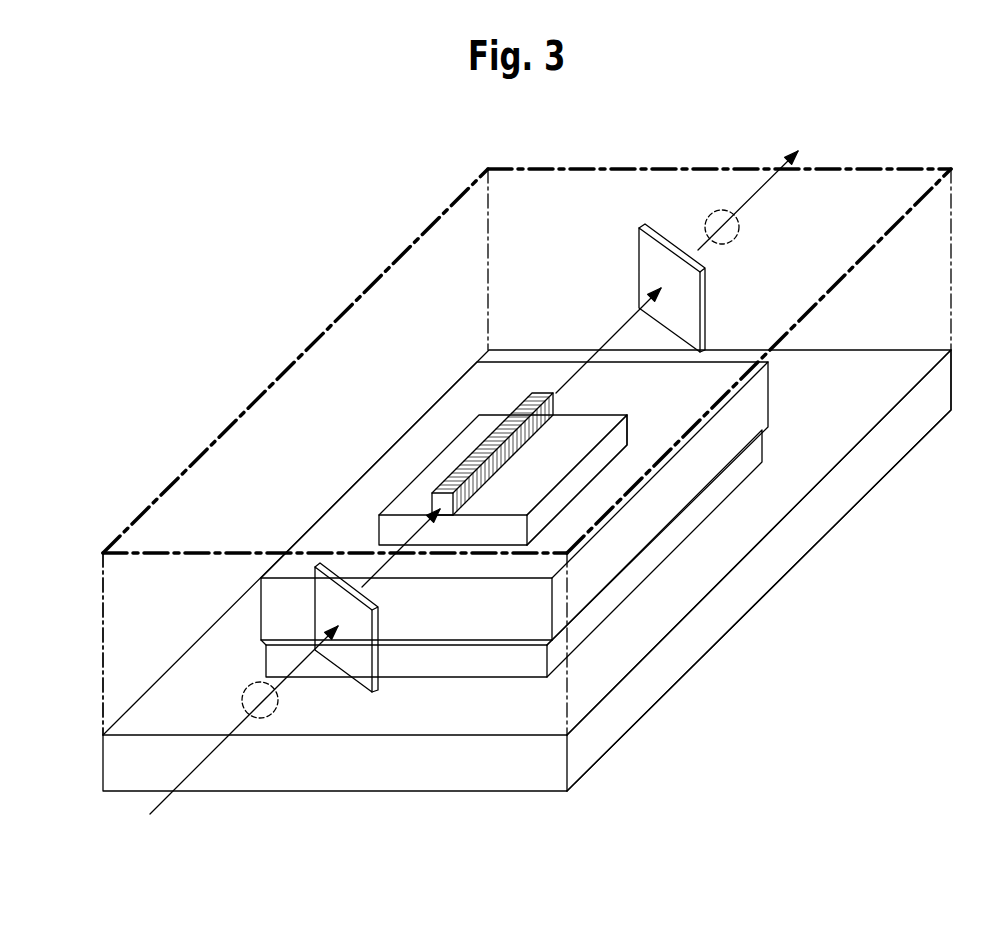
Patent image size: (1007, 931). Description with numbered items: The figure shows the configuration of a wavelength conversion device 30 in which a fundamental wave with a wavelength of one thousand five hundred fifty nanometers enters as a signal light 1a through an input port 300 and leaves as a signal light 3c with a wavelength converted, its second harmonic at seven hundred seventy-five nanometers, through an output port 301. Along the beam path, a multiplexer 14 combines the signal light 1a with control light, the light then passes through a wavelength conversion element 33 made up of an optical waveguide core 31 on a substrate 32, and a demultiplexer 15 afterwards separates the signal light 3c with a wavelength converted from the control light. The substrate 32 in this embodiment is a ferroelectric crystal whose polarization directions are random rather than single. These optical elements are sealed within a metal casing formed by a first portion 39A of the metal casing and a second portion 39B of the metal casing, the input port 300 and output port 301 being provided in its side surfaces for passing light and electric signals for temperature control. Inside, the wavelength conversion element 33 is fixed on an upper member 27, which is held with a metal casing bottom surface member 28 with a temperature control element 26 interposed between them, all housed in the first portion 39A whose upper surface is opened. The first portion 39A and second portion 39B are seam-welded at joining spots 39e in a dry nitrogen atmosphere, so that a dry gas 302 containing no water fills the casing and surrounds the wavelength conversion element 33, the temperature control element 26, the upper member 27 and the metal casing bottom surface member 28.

The signal light 1a is at (160, 807).
The signal light with a wavelength converted 3c is at (793, 152).
The multiplexer 14 is at (378, 662).
The demultiplexer 15 is at (645, 228).
The temperature control element 26 is at (273, 663).
The upper member 27 is at (347, 507).
The metal casing bottom surface member 28 is at (118, 767).
The wavelength conversion device 30 is at (868, 618).
The optical waveguide core 31 is at (520, 408).
The substrate 32 is at (463, 443).
The wavelength conversion element 33 is at (518, 550).
The first portion of the metal casing 39A is at (457, 233).
The second portion of the metal casing 39B is at (533, 213).
The joining spots by seam welding 39e is at (917, 200).
The input port 300 is at (277, 708).
The output port 301 is at (738, 237).
The dry gas 302 is at (118, 665).